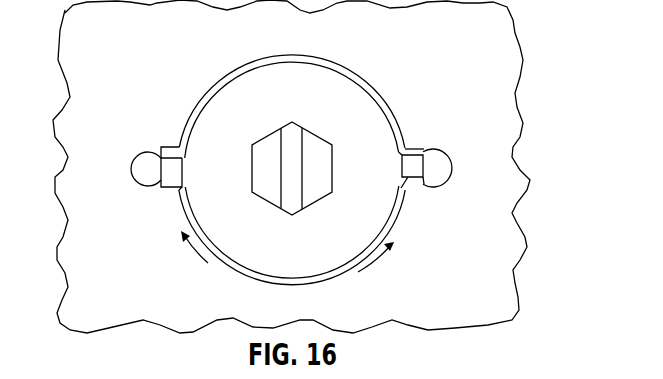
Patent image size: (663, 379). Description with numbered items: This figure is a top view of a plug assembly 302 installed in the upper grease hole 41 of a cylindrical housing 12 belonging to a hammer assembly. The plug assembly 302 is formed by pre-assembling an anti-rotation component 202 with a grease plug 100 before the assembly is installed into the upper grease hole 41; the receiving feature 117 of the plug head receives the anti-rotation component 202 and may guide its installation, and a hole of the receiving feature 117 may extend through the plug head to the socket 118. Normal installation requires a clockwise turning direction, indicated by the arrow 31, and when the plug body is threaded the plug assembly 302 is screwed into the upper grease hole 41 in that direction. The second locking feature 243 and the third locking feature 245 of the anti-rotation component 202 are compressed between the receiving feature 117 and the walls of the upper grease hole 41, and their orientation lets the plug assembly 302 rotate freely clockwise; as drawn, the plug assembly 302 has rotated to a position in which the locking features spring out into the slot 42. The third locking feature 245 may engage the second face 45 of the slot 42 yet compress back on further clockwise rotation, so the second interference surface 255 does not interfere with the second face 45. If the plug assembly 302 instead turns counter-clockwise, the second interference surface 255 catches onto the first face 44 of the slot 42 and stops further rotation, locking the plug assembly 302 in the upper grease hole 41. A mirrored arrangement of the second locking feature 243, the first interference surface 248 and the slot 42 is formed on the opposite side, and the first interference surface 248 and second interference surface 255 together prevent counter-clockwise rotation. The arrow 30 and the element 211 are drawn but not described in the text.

The cylindrical housing 12 is at (507, 257).
The plug assembly 302 is at (170, 38).
The grease plug 100 is at (363, 83).
The receiving feature 117 is at (288, 281).
The socket 118 is at (267, 136).
The anti-rotation component 202 is at (397, 196).
The drive face 211 is at (308, 152).
The slot 42 is at (143, 172).
The first face 44 is at (430, 150).
The second face 45 is at (427, 186).
The second locking feature 243 is at (168, 158).
The first interference surface 248 is at (180, 188).
The second interference surface 255 is at (410, 154).
The third locking feature 245 is at (427, 190).
The rotation direction arrow 30 is at (360, 273).
The arrow 31 is at (206, 260).
The upper grease hole 41 is at (243, 278).